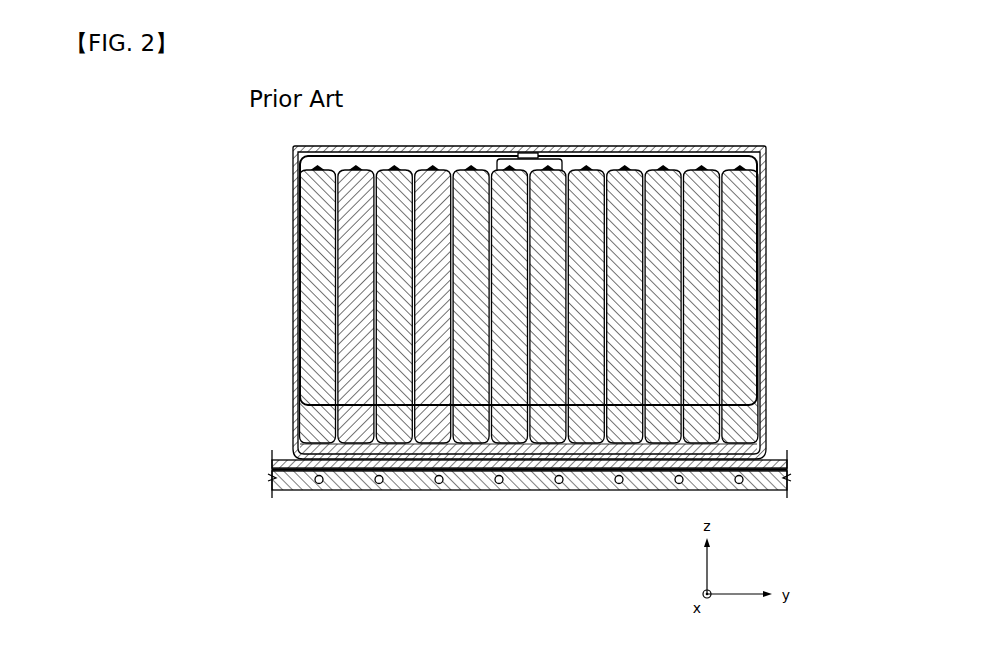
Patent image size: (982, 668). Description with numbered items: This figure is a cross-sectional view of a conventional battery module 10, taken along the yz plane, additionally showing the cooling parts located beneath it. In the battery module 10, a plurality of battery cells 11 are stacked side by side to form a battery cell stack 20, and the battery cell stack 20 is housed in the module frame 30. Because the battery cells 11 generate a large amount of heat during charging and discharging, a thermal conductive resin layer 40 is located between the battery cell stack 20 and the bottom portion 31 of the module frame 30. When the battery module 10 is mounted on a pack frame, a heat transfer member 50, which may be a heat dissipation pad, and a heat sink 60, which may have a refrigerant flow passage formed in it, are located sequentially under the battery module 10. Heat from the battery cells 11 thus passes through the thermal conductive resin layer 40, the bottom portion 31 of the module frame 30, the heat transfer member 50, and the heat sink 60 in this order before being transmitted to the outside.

The battery module 10 is at (516, 101).
The battery cell 11 is at (742, 323).
The battery cell stack 20 is at (557, 405).
The module frame 30 is at (492, 344).
The bottom portion 31 is at (328, 455).
The thermal conductive resin layer 40 is at (355, 452).
The heat transfer member 50 is at (412, 466).
The heat sink 60 is at (473, 478).